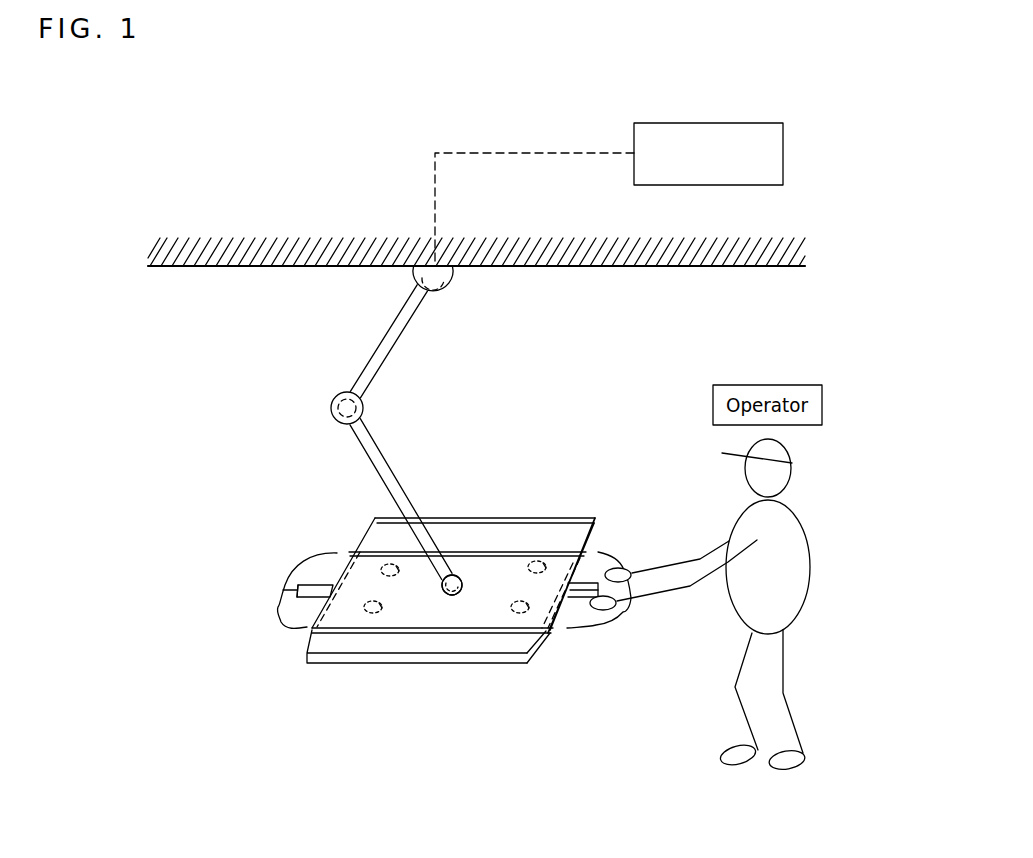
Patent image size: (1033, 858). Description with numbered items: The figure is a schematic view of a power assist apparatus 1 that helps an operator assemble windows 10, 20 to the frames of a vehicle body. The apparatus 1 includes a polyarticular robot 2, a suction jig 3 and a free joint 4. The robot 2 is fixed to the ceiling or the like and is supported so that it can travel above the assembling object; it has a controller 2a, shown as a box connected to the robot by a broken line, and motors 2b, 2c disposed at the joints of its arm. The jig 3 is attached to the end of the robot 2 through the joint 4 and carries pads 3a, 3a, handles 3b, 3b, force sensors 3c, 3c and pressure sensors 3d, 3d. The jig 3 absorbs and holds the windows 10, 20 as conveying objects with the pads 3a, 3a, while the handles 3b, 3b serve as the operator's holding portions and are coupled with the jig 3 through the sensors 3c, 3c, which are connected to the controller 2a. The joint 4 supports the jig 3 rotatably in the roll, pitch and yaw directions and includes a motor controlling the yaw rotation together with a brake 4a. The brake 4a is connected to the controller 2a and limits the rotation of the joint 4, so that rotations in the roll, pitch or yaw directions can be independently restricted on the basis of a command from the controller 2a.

The power assist apparatus 1 is at (203, 374).
The polyarticular robot 2 is at (395, 345).
The controller 2a is at (783, 153).
The motor 2b is at (453, 288).
The motor 2c is at (330, 407).
The suction jig 3 is at (428, 633).
The pad 3a is at (390, 567).
The handle 3b is at (280, 623).
The force sensor 3c is at (312, 598).
The pressure sensor 3d is at (393, 543).
The free joint 4 is at (467, 583).
The brake 4a is at (455, 574).
The window 10 is at (468, 663).
The window 20 is at (428, 724).